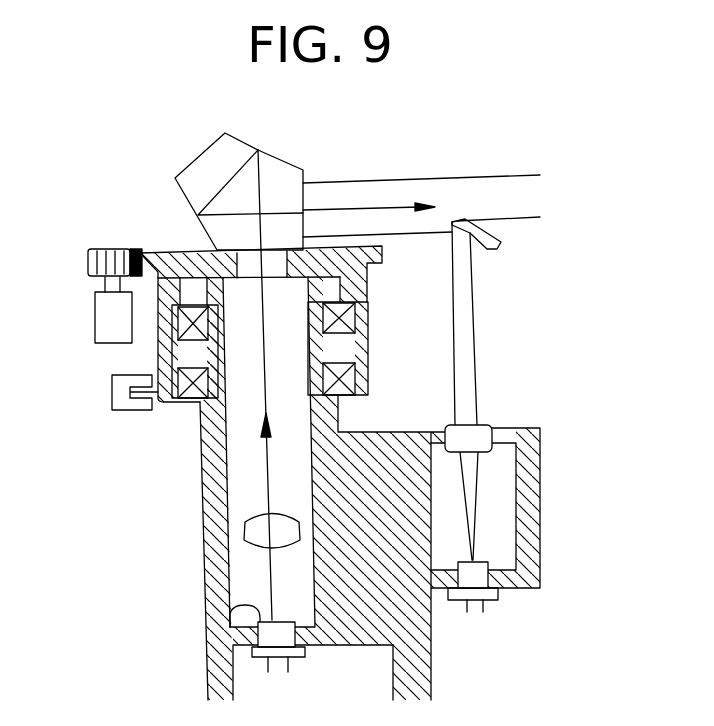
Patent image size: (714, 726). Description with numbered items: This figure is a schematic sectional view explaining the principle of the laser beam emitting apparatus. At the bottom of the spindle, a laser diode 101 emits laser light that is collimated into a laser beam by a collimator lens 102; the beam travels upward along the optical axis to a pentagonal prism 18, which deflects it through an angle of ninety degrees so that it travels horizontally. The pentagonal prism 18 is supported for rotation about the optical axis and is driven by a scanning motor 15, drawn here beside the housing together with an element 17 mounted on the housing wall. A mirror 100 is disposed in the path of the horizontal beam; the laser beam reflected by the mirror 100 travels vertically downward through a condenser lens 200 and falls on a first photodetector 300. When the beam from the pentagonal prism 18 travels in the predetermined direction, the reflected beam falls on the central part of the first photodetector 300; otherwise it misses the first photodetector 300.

The pentagonal prism 18 is at (288, 162).
The mirror 100 is at (494, 250).
The condenser lens 200 is at (483, 437).
The first photodetector 300 is at (483, 558).
The scanning motor 15 is at (94, 327).
The clip 17 is at (126, 410).
The collimator lens 102 is at (247, 530).
The laser diode 101 is at (248, 606).